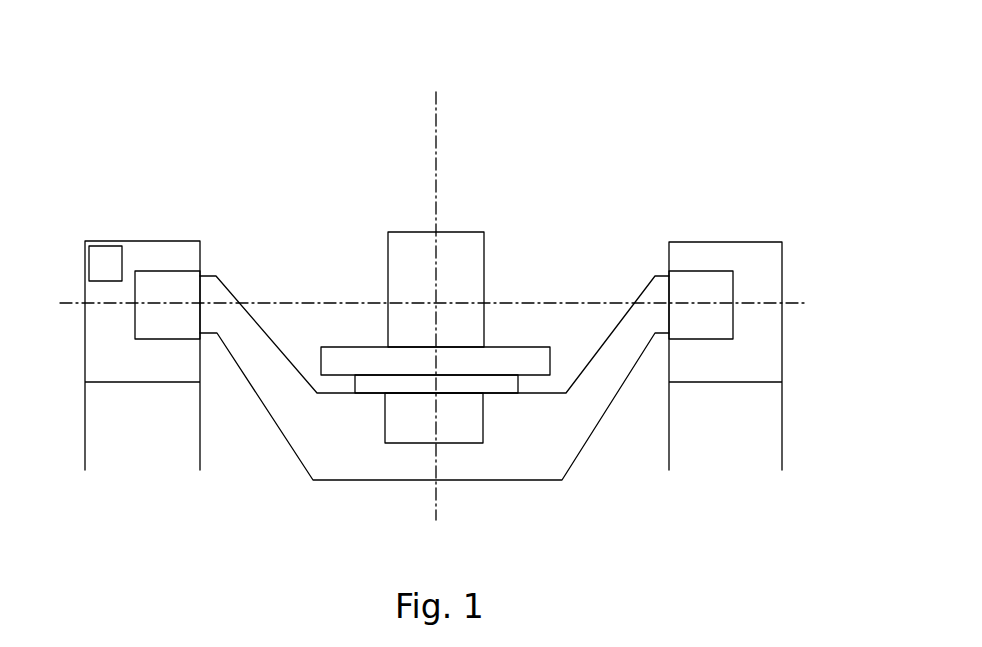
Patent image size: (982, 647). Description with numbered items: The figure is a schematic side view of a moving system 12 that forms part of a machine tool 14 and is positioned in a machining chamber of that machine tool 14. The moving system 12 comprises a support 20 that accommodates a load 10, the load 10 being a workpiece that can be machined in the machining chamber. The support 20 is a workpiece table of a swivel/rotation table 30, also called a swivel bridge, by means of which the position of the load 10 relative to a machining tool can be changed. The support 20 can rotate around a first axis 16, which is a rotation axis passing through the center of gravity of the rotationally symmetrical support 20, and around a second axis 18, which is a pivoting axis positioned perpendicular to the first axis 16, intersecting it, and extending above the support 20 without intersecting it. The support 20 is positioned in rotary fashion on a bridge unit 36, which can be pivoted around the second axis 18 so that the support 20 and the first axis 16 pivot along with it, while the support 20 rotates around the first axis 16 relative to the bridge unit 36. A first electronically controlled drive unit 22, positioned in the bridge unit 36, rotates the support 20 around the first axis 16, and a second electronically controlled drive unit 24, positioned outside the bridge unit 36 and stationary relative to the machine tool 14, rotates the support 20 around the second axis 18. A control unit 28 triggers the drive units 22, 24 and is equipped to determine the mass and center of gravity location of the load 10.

The load 10 is at (400, 240).
The moving system 12 is at (557, 182).
The machine tool 14 is at (669, 417).
The first axis 16 is at (437, 185).
The second axis 18 is at (805, 303).
The support 20 is at (372, 357).
The first electronically controlled drive unit 22 is at (385, 419).
The second electronically controlled drive unit 24 is at (180, 271).
The control unit 28 is at (112, 243).
The swivel/rotation table 30 is at (337, 112).
The bridge unit 36 is at (530, 435).